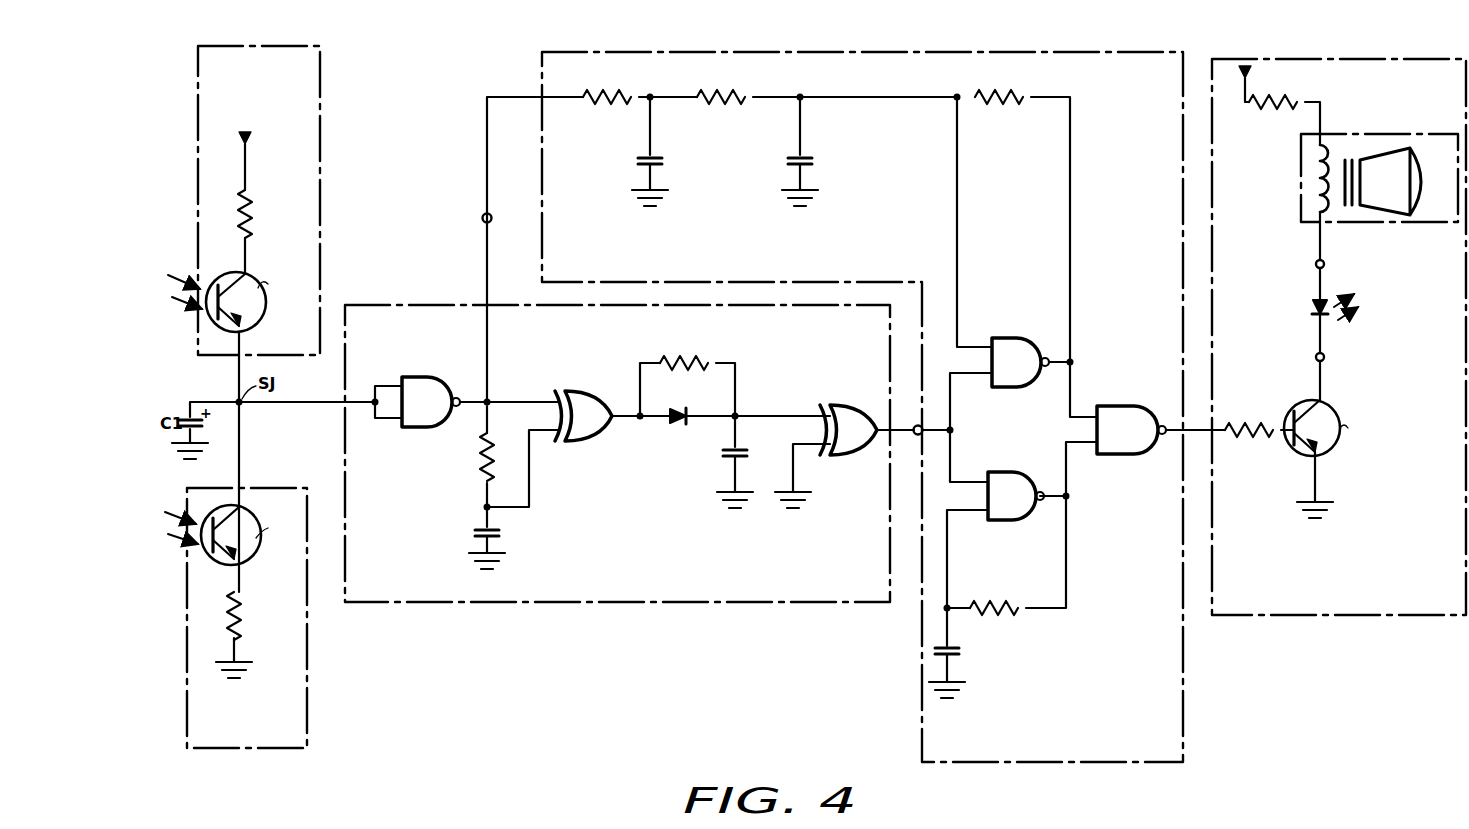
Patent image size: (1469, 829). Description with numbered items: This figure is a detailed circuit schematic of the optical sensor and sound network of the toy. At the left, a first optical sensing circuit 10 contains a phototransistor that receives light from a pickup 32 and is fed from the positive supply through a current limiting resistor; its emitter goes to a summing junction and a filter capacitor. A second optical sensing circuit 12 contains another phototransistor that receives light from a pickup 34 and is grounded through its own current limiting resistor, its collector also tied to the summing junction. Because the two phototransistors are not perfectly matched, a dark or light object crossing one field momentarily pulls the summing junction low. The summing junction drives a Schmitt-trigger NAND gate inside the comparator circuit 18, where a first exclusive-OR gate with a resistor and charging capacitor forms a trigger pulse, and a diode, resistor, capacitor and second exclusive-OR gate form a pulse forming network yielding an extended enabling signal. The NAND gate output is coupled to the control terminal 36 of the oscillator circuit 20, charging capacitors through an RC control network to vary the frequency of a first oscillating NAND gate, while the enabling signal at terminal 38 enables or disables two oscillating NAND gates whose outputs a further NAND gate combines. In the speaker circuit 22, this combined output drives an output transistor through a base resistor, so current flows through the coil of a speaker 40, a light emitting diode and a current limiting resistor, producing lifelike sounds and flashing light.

The first optical sensing circuit 10 is at (300, 79).
The second optical sensing circuit 12 is at (290, 745).
The comparator circuit 18 is at (870, 599).
The oscillator circuit 20 is at (1164, 753).
The speaker circuit 22 is at (1457, 612).
The pickup 32 is at (156, 282).
The pickup 34 is at (150, 519).
The control terminal 36 is at (482, 218).
The terminal 38 is at (925, 428).
The speaker 40 is at (1420, 224).